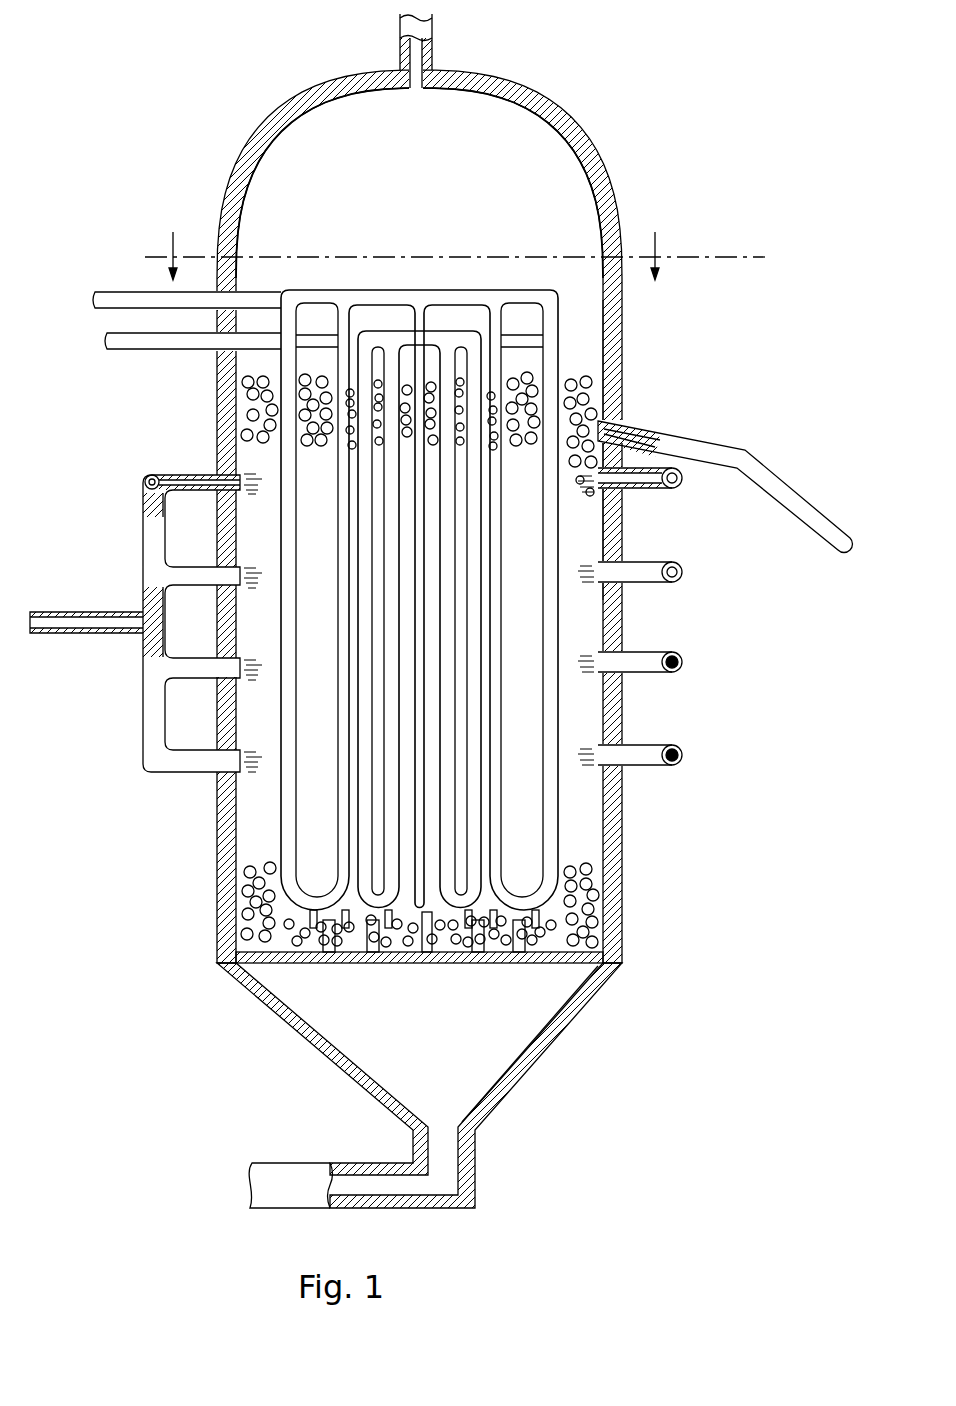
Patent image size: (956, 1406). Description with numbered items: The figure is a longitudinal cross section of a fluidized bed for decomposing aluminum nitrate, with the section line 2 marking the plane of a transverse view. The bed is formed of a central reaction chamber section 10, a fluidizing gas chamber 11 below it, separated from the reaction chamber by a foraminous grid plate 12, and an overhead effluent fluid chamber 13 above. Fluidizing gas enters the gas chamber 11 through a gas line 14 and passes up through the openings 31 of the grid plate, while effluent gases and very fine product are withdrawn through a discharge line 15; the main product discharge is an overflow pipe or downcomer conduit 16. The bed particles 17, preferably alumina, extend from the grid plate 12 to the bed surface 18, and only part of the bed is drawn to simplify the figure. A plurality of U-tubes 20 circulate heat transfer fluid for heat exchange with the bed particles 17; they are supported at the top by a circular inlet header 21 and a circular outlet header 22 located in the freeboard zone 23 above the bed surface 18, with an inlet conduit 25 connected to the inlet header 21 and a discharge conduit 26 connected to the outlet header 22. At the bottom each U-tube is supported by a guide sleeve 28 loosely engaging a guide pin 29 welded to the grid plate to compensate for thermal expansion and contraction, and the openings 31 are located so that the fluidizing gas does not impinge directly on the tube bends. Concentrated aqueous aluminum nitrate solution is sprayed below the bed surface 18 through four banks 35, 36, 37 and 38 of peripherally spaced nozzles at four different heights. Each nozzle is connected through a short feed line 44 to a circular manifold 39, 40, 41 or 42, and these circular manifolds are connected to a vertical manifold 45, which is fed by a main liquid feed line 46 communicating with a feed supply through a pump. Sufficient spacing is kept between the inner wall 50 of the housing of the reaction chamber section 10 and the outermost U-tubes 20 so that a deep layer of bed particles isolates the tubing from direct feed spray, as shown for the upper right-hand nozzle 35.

The section line 2- 2 is at (443, 256).
The central reaction chamber section 10 is at (604, 327).
The fluidizing gas chamber 11 is at (500, 1048).
The foraminous grid plate 12 is at (610, 940).
The overhead effluent fluid chamber 13 is at (527, 148).
The gas line 14 is at (380, 1185).
The discharge line 15 is at (428, 32).
The overflow pipe or downcomer conduit 16 is at (668, 443).
The bed particles 17 is at (604, 388).
The bed surface 18 is at (248, 386).
The U-tubes 20 is at (345, 822).
The circular inlet header 21 is at (344, 292).
The circular outlet header 22 is at (390, 335).
The freeboard zone 23 is at (593, 325).
The inlet conduit 25 is at (127, 297).
The discharge conduit 26 is at (152, 349).
The guide sleeve 28 is at (470, 963).
The guide pin 29 is at (432, 963).
The openings of the grid plate 31 is at (585, 958).
The nozzle bank 35 is at (243, 493).
The nozzle bank 36 is at (244, 586).
The nozzle bank 37 is at (244, 679).
The nozzle bank 38 is at (244, 773).
The circular manifold 39 is at (684, 478).
The circular manifold 40 is at (685, 573).
The circular manifold 41 is at (684, 662).
The circular manifold 42 is at (684, 755).
The short feed line 44 is at (195, 478).
The vertical manifold 45 is at (150, 528).
The main liquid feed line 46 is at (122, 614).
The inner wall of the housing 50 is at (603, 352).